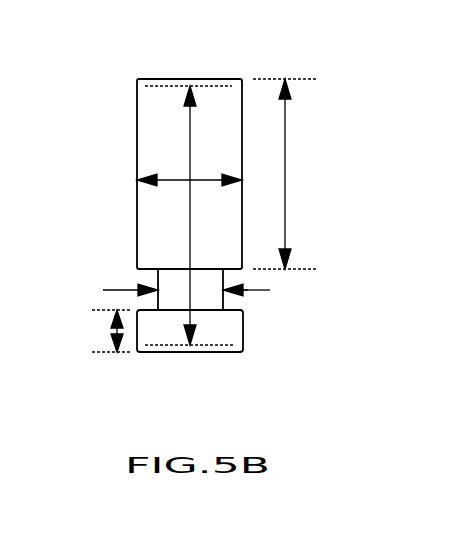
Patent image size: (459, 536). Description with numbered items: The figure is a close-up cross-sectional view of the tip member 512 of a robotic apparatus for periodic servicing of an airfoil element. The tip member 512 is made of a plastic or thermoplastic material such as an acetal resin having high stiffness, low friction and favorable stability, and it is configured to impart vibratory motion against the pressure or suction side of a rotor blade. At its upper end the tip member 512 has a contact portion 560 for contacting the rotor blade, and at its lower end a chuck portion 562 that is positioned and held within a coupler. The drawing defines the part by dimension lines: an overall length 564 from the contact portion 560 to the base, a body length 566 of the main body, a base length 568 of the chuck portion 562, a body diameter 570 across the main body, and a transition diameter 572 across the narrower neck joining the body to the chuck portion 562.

The tip member 512 is at (145, 108).
The contact portion 560 is at (220, 78).
The chuck portion 562 is at (233, 327).
The overall length 564 is at (190, 152).
The body length 566 is at (286, 153).
The base length 568 is at (115, 318).
The body diameter 570 is at (207, 177).
The transition diameter 572 is at (270, 291).